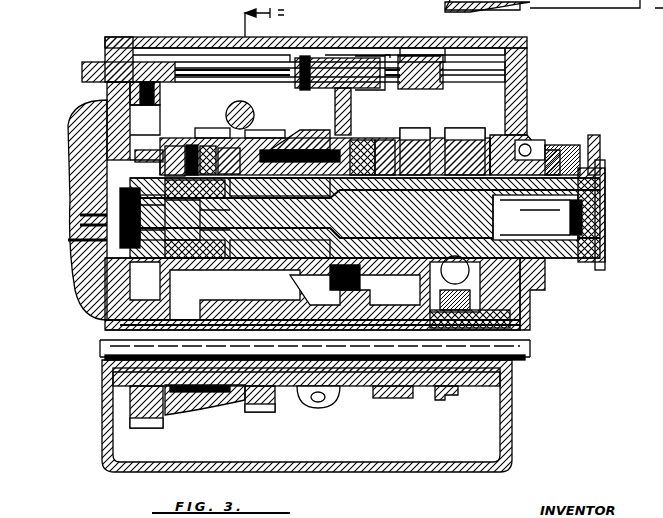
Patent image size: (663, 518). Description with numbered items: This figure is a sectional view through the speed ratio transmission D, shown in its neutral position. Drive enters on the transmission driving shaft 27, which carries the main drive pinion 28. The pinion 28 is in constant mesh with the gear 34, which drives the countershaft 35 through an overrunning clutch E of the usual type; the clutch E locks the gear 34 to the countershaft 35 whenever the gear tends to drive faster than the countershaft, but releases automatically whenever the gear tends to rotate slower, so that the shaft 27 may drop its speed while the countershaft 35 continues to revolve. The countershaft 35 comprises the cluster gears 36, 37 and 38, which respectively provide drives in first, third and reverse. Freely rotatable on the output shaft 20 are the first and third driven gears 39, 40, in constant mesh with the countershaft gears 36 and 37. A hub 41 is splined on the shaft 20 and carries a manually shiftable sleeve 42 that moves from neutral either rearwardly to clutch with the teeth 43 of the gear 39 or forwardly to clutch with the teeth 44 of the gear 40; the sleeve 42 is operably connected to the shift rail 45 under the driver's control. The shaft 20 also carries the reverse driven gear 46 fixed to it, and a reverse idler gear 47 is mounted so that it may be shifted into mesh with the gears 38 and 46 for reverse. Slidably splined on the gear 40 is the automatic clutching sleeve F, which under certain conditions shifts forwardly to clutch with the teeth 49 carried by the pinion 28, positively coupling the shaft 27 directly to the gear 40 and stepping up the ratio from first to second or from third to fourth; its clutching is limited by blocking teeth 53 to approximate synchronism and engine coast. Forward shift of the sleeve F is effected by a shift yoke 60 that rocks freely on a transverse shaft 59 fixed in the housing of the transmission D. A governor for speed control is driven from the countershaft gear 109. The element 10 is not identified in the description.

The speed ratio transmission D is at (300, 37).
The shift rail 45 is at (185, 62).
The third driven gear 40 is at (275, 135).
The automatic clutching sleeve F is at (258, 125).
The main drive pinion 28 is at (158, 150).
The teeth 49 is at (175, 146).
The transverse shaft 59 is at (195, 145).
The shift yoke 60 is at (208, 146).
The blocking teeth 53 is at (228, 148).
The teeth 44 is at (305, 140).
The manually shiftable sleeve 42 is at (362, 140).
The teeth 43 is at (382, 140).
The first driven gear 39 is at (412, 128).
The reverse driven gear 46 is at (445, 140).
The hub 41 is at (310, 198).
The output shaft 20 is at (605, 182).
The transmission driving shaft 27 is at (66, 208).
The reverse idler gear 47 is at (455, 328).
The base plate 10 is at (315, 350).
The countershaft gear 109 is at (290, 338).
The gear 34 is at (140, 428).
The overrunning clutch E is at (182, 410).
The cluster gear 37 is at (265, 412).
The countershaft 35 is at (350, 386).
The cluster gear 36 is at (400, 398).
The cluster gear 38 is at (440, 400).